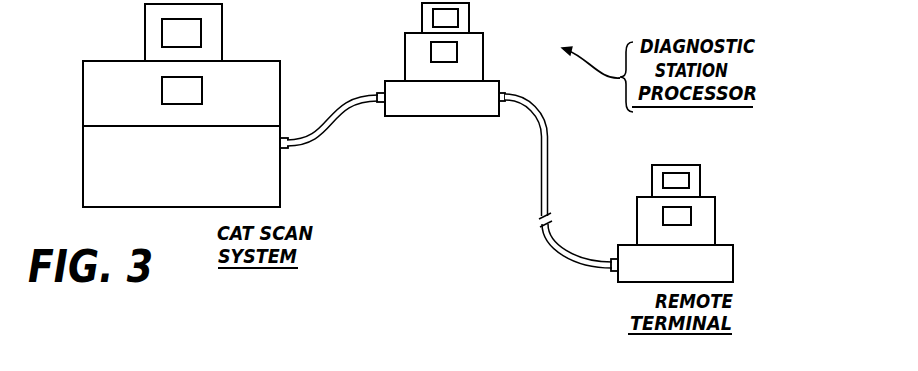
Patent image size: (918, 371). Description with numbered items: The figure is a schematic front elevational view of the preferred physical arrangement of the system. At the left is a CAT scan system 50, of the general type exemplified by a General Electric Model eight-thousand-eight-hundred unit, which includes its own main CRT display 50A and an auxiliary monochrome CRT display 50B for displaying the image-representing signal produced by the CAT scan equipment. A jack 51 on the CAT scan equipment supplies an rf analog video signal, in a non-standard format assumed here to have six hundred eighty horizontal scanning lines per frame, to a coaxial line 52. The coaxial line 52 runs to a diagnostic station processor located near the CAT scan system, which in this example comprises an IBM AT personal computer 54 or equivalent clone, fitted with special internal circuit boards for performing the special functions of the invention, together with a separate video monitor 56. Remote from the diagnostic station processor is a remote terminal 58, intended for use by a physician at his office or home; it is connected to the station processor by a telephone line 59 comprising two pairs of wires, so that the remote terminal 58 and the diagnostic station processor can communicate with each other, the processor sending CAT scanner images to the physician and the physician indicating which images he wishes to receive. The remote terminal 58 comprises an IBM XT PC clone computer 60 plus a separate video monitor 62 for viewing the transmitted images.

The CAT scan system 50 is at (80, 133).
The main CRT display 50A is at (202, 79).
The auxiliary monochrome CRT display 50B is at (222, 38).
The jack 51 is at (285, 137).
The coaxial line 52 is at (336, 123).
The personal computer 54 is at (502, 45).
The video monitor 56 is at (469, 10).
The remote terminal 58 is at (727, 220).
The telephone line 59 is at (538, 135).
The computer 60 is at (625, 200).
The video monitor 62 is at (700, 173).